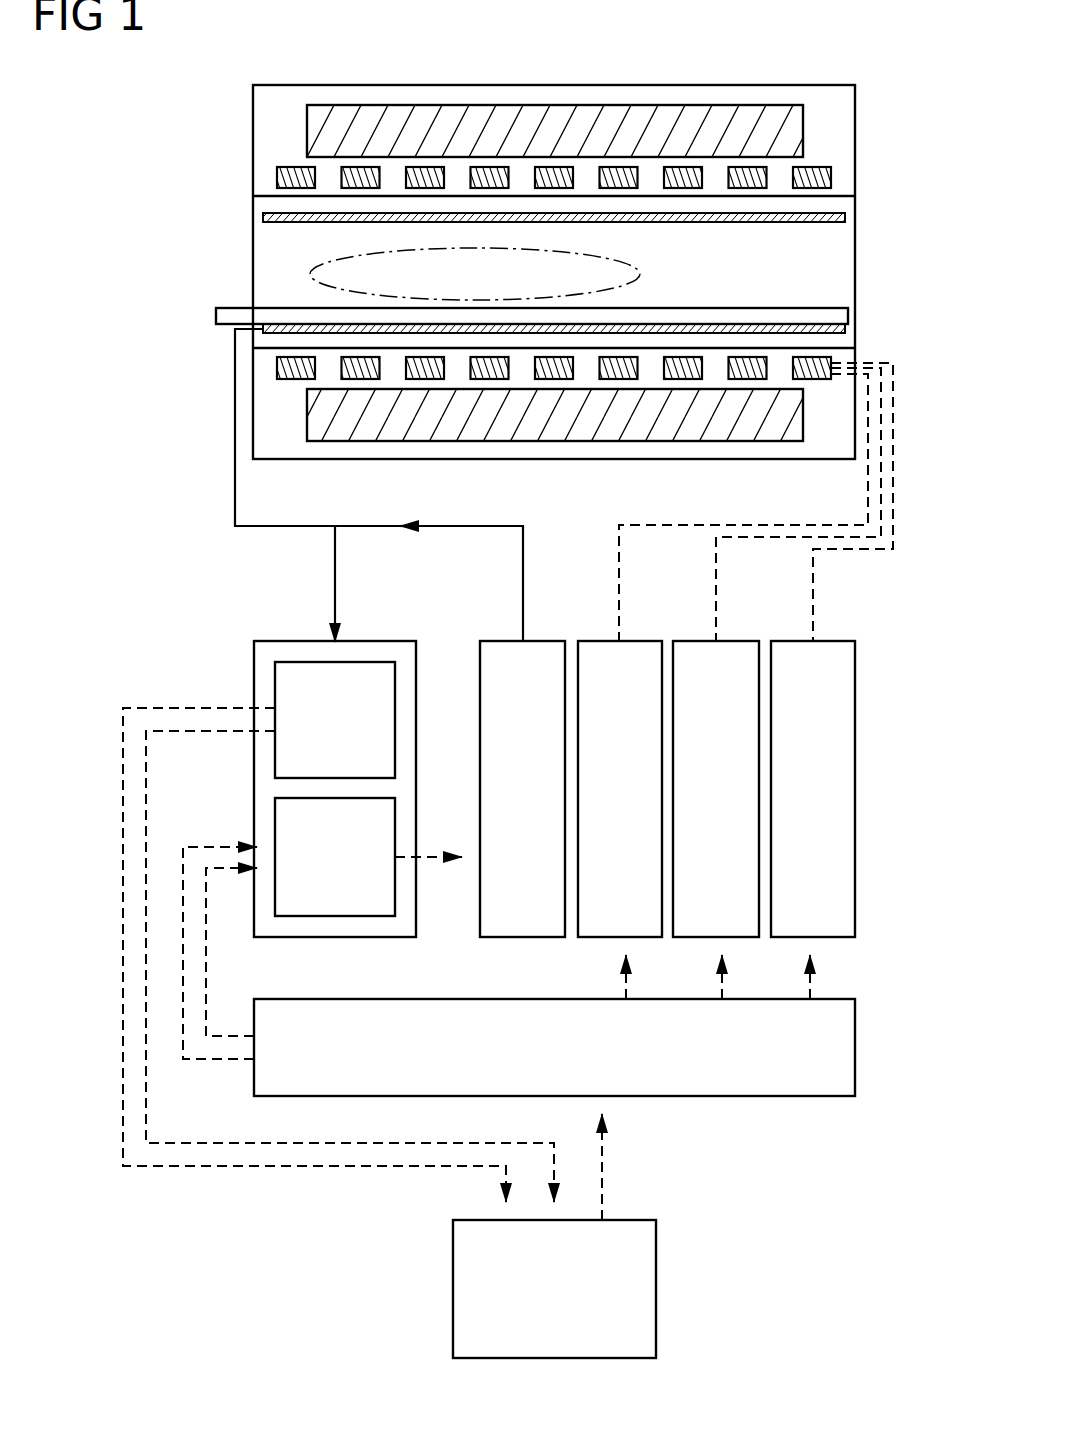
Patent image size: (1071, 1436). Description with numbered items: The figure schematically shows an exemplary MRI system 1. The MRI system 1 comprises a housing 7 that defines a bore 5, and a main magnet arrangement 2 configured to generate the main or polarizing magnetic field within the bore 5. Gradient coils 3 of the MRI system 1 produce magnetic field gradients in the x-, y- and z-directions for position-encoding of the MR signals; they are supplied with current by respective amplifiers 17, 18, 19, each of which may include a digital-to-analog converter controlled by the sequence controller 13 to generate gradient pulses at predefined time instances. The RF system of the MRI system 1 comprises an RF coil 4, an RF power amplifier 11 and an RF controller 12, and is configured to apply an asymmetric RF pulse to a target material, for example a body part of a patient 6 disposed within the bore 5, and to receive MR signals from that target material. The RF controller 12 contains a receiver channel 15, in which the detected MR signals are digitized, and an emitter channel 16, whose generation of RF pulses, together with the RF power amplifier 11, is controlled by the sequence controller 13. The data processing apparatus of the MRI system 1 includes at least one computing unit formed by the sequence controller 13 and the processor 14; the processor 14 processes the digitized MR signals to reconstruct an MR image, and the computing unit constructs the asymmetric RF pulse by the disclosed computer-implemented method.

The MRI system 1 is at (140, 196).
The main magnet arrangement 2 is at (803, 128).
The gradient coils 3 is at (831, 178).
The RF coil 4 is at (845, 218).
The bore 5 is at (282, 247).
The patient 6 is at (640, 274).
The housing 7 is at (598, 85).
The RF power amplifier 11 is at (508, 800).
The RF controller 12 is at (254, 790).
The sequence controller 13 is at (533, 1062).
The processor 14 is at (533, 1305).
The receiver channel 15 is at (318, 735).
The emitter channel 16 is at (318, 873).
The amplifier 17 is at (603, 800).
The amplifier 18 is at (699, 800).
The amplifier 19 is at (796, 800).